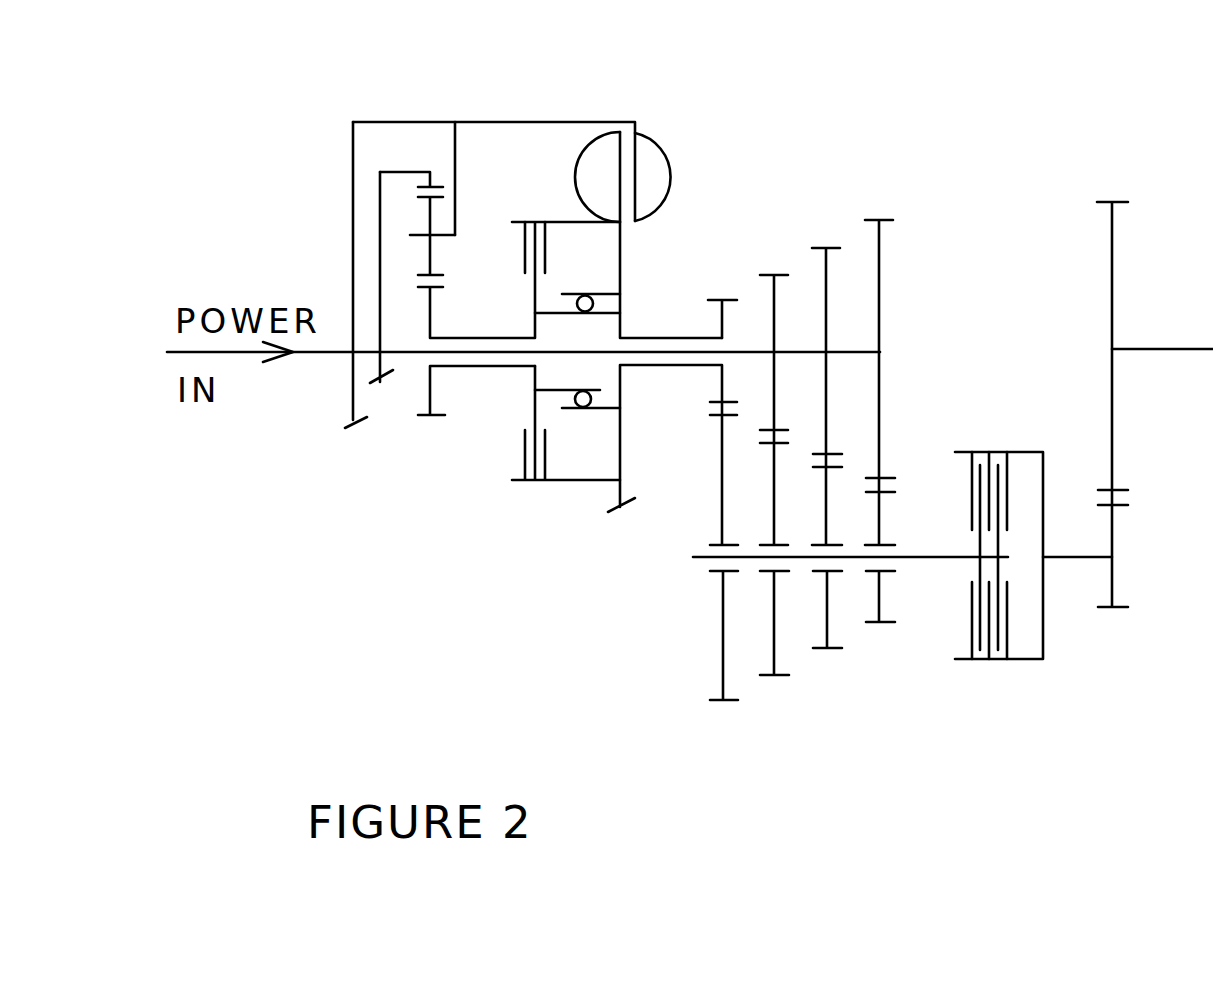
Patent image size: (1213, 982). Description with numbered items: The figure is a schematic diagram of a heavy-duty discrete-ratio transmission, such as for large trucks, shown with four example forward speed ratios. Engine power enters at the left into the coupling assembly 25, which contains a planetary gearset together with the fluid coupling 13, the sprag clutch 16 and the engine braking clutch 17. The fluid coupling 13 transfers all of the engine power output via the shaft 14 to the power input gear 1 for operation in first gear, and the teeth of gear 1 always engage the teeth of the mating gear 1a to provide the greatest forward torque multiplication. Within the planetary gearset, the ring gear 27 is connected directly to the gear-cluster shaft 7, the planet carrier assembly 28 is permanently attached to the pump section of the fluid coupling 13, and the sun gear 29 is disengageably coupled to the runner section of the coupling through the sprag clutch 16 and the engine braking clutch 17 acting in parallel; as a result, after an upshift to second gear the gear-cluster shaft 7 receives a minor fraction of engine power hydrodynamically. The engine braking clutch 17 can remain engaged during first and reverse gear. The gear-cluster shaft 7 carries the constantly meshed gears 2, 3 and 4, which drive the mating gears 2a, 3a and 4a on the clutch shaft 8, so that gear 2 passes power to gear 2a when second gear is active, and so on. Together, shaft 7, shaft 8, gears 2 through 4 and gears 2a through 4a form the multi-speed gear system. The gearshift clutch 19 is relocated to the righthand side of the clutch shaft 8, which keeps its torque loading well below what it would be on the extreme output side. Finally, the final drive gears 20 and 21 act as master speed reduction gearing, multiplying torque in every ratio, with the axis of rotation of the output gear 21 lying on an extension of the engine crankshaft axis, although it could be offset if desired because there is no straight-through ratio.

The power input gear 1 is at (722, 315).
The second speed gear 2 is at (772, 298).
The third speed gear 3 is at (822, 272).
The fourth speed gear 4 is at (877, 243).
The first mating gear 1a is at (722, 628).
The second mating gear 2a is at (773, 655).
The third mating gear 3a is at (825, 628).
The fourth mating gear 4a is at (878, 605).
The gear-cluster shaft 7 is at (867, 350).
The clutch shaft 8 is at (942, 555).
The fluid coupling 13 is at (673, 167).
The shaft 14 is at (645, 365).
The sprag clutch 16 is at (578, 410).
The engine braking clutch 17 is at (523, 457).
The gearshift clutch 19 is at (1025, 452).
The final drive gear 20 is at (1113, 577).
The final drive gear 21 is at (1110, 270).
The coupling assembly 25 is at (418, 84).
The ring gear 27 is at (437, 183).
The planet carrier assembly 28 is at (445, 238).
The sun gear 29 is at (428, 402).